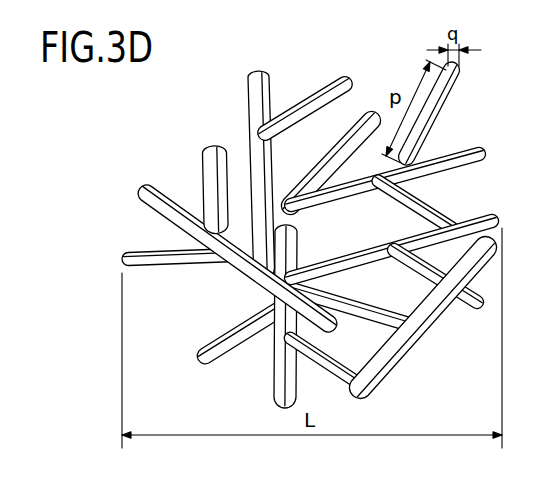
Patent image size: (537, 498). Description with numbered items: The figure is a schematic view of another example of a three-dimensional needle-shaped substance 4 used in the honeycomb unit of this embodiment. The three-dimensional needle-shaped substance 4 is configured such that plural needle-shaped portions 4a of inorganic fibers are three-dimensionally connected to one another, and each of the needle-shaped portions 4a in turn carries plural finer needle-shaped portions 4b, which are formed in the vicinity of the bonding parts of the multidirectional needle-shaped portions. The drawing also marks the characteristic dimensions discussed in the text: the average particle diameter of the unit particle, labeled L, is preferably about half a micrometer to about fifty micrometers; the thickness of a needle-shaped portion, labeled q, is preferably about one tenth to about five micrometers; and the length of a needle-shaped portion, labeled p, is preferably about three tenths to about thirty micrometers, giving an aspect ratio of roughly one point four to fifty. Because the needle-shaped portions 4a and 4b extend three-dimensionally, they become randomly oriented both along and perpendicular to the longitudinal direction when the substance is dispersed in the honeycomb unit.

The three-dimensional needle-shaped substance 4 is at (206, 79).
The needle-shaped portion 4a is at (255, 73).
The finer needle-shaped portion 4b is at (311, 92).